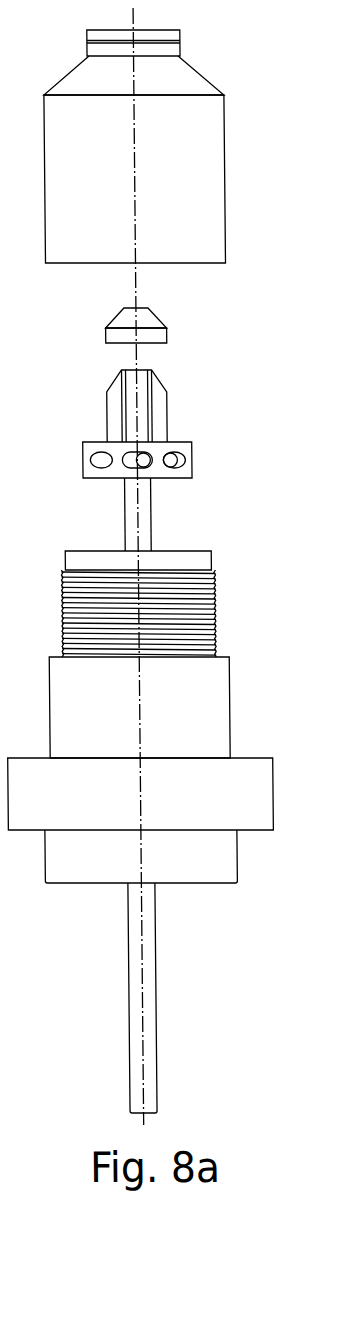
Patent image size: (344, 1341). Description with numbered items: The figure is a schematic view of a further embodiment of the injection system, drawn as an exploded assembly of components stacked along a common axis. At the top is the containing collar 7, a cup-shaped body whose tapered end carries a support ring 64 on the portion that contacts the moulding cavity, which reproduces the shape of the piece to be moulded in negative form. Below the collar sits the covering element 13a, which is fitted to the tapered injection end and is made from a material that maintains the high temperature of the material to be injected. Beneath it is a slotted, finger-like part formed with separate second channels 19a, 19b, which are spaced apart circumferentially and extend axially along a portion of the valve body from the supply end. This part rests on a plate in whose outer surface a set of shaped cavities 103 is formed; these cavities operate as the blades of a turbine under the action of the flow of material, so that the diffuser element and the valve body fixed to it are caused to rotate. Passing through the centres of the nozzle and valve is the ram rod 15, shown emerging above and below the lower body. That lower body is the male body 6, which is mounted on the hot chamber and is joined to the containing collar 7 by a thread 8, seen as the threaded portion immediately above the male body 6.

The support ring 64 is at (182, 42).
The containing collar 7 is at (220, 184).
The covering element 13a is at (162, 320).
The second channel 19a is at (146, 420).
The second channel 19b is at (118, 417).
The shaped cavities 103 is at (84, 457).
The ram rod 15 is at (142, 508).
The thread 8 is at (209, 608).
The male body 6 is at (221, 715).